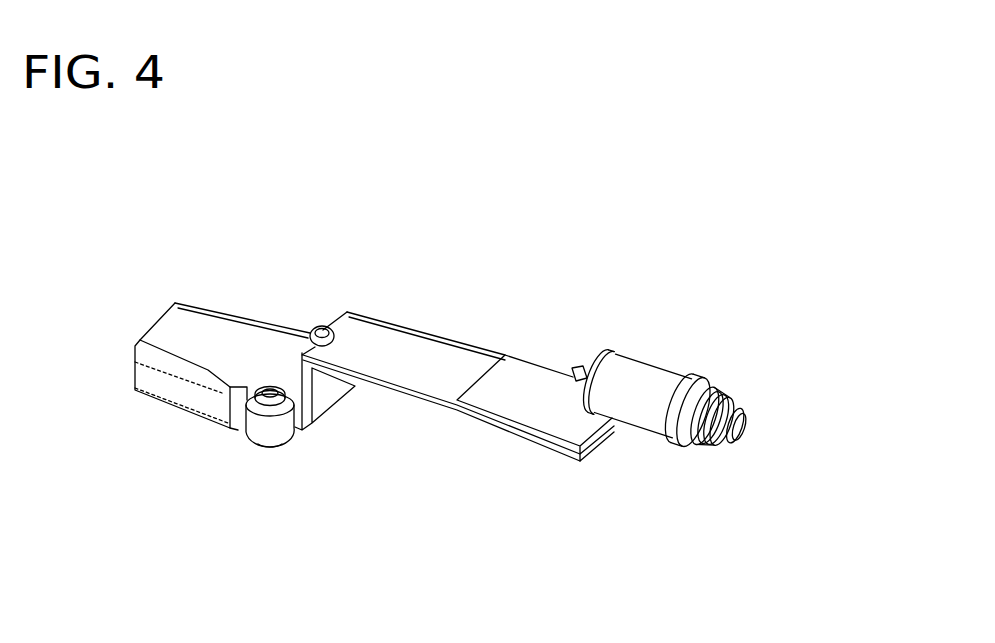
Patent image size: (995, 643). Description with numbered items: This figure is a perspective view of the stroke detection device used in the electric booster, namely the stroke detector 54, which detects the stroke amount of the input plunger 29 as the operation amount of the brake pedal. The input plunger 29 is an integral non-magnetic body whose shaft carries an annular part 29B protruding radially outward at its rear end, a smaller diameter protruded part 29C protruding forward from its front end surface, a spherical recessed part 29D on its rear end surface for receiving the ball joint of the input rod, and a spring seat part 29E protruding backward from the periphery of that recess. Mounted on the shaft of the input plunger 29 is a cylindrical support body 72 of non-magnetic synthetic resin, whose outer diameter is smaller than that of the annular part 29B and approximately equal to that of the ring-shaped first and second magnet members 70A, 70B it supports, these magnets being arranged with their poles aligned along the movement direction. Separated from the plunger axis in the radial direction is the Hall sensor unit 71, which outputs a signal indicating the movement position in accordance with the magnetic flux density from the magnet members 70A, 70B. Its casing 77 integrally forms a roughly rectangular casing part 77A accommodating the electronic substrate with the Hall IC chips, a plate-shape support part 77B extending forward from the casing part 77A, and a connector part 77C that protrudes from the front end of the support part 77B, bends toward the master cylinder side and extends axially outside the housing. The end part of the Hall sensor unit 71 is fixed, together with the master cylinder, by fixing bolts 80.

The input plunger 29 is at (735, 390).
The annular part 29B is at (683, 455).
The smaller diameter protruded part 29C is at (578, 368).
The spherical recessed part 29D is at (733, 424).
The spring seat part 29E is at (727, 450).
The stroke detector 54 is at (667, 285).
The first magnet member 70A is at (603, 350).
The second magnet member 70B is at (690, 382).
The Hall sensor unit 71 is at (240, 455).
The cylindrical support body 72 is at (662, 378).
The casing 77 is at (428, 423).
The casing part 77A is at (512, 437).
The plate-shape support part 77B is at (430, 360).
The connector part 77C is at (205, 328).
The fixing bolts 80 is at (322, 328).